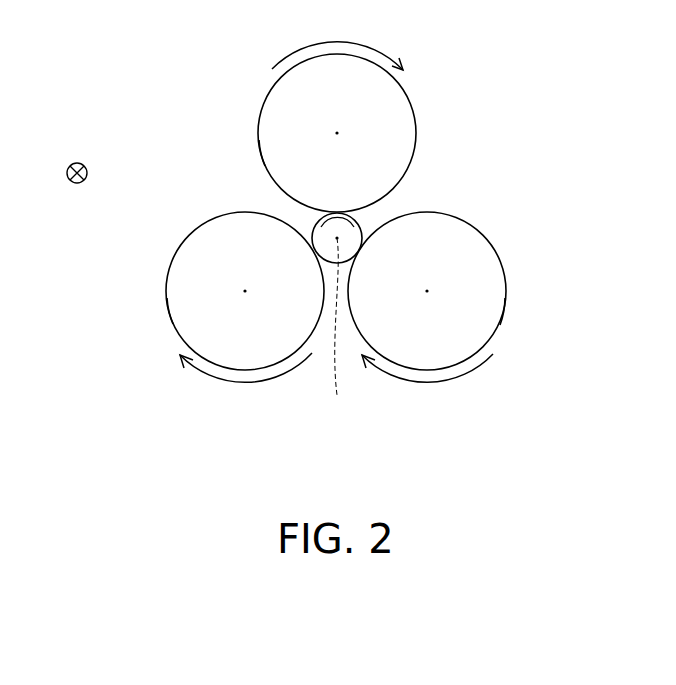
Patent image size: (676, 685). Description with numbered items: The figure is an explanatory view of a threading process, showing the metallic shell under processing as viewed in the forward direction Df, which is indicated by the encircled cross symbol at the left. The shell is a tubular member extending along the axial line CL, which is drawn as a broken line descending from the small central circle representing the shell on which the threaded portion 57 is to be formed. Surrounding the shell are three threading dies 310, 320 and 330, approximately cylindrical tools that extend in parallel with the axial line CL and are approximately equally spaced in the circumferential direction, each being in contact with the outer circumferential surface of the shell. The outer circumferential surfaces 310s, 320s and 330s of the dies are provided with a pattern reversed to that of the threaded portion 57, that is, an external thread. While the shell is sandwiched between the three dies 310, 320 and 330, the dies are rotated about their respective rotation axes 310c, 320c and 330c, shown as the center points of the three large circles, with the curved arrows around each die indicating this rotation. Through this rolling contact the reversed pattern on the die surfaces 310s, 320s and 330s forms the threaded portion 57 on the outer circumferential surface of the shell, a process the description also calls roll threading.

The threading die 310 is at (270, 132).
The rotation axis 310c is at (336, 132).
The outer circumferential surface 310s is at (265, 166).
The threading die 320 is at (180, 292).
The rotation axis 320c is at (244, 290).
The outer circumferential surface 320s is at (173, 324).
The threading die 330 is at (493, 290).
The rotation axis 330c is at (428, 290).
The outer circumferential surface 330s is at (500, 325).
The threaded portion 57 is at (361, 229).
The axial line CL is at (335, 331).
The forward direction Df is at (62, 188).